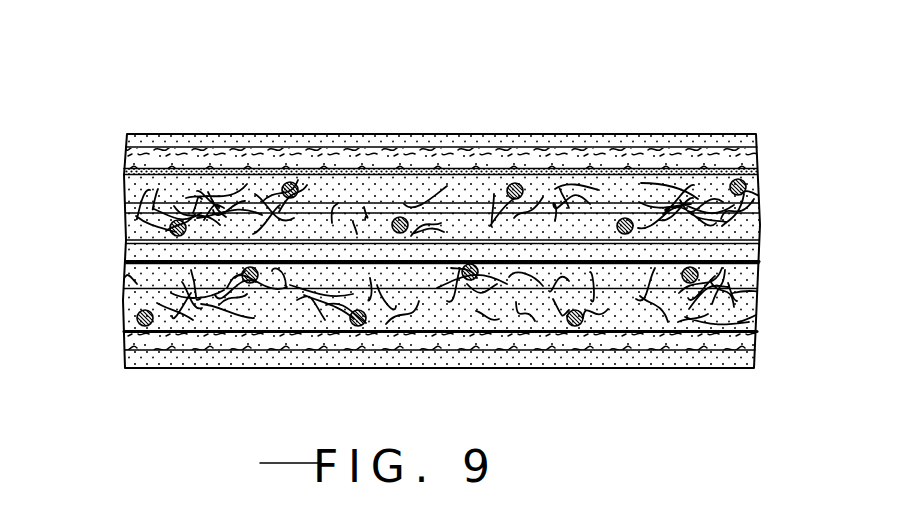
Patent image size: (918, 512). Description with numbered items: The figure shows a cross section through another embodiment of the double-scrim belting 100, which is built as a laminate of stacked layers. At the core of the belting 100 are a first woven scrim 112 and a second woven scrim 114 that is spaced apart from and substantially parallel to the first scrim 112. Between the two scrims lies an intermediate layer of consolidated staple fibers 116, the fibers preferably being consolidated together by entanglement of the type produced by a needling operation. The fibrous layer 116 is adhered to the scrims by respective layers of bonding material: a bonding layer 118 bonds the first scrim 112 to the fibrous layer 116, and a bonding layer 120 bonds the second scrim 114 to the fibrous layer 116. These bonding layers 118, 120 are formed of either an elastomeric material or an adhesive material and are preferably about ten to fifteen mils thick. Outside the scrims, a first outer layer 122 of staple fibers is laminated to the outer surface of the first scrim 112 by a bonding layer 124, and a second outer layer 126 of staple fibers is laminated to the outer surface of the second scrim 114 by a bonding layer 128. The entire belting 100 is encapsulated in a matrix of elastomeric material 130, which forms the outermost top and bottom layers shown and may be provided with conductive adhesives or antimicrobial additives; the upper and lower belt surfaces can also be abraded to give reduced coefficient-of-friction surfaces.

The double-scrim belting 100 is at (632, 113).
The first woven scrim 112 is at (762, 208).
The second woven scrim 114 is at (118, 293).
The intermediate layer of consolidated staple fibers 116 is at (757, 257).
The bonding layer 118 is at (757, 243).
The bonding layer 120 is at (122, 262).
The first outer layer of staple fibers 122 is at (758, 162).
The bonding layer 124 is at (760, 170).
The second outer layer of staple fibers 126 is at (122, 348).
The bonding layer 128 is at (122, 330).
The elastomeric material 130 is at (723, 134).